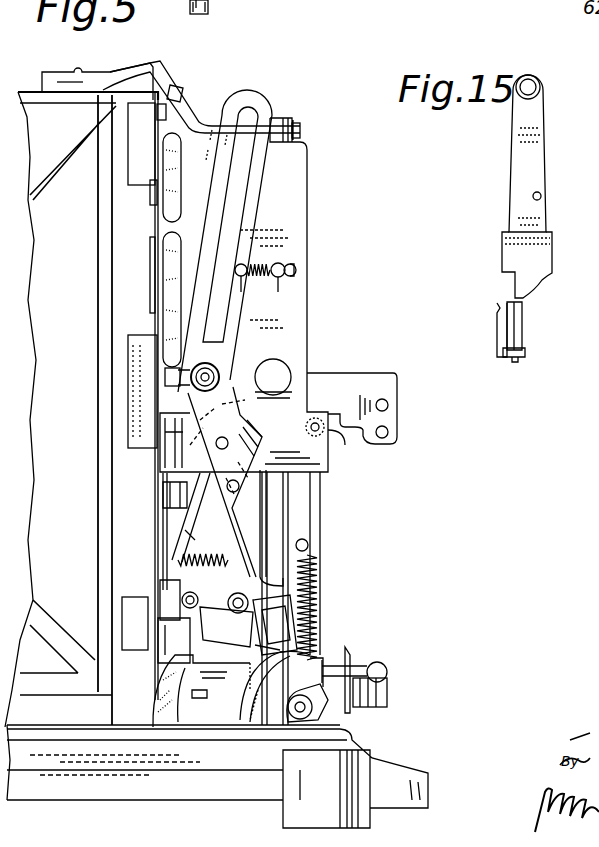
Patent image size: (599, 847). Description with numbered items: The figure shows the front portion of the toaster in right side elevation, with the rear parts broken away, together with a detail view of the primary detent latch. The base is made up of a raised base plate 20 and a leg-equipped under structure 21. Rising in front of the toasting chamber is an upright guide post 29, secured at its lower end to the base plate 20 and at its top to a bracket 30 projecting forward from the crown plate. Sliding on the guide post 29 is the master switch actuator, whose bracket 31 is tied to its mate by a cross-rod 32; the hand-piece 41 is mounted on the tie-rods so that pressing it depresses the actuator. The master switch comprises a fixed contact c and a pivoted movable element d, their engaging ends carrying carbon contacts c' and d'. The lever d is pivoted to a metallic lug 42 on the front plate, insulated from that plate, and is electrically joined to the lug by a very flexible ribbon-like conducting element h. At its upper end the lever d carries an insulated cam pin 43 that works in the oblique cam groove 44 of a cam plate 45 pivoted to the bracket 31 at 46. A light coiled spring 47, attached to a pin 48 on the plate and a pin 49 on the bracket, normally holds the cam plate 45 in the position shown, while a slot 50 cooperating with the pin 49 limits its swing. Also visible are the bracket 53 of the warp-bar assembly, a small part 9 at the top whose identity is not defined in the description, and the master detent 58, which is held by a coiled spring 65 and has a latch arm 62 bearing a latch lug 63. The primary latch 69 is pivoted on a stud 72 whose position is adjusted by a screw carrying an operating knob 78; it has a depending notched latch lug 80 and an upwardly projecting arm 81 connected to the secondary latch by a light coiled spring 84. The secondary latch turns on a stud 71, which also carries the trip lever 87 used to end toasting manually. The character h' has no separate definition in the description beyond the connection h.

In FIG. 5, the pin 9 is at (203, 14).
In FIG. 5, the base plate 20 is at (65, 748).
In FIG. 5, the under structure 21 is at (155, 800).
In FIG. 5, the guide posts 29 is at (303, 148).
In FIG. 5, the brackets 30 is at (170, 50).
In FIG. 5, the brackets 31 is at (312, 455).
In FIG. 5, the cross-rod 32 is at (280, 7).
In FIG. 5, the hand-piece 41 is at (368, 380).
In FIG. 5, the lug 42 is at (165, 440).
In FIG. 5, the cam pin 43 is at (218, 368).
In FIG. 5, the cam groove 44 is at (265, 232).
In FIG. 5, the cam plate 45 is at (298, 310).
In FIG. 5, the pivot 46 is at (275, 378).
In FIG. 5, the coiled spring 47 is at (262, 265).
In FIG. 5, the pin 48 is at (245, 286).
In FIG. 5, the pin 49 is at (282, 286).
In FIG. 5, the slot 50 is at (296, 270).
In FIG. 5, the bracket 53 is at (190, 8).
In FIG. 5, the master detent 58 is at (247, 718).
In FIG. 5, the coiled spring 65 is at (305, 567).
In FIG. 5, the stud 71 is at (290, 602).
In FIG. 5, the stud 72 is at (183, 598).
In FIG. 5, the operating knob 78 is at (378, 685).
In FIG. 5, the coiled spring 84 is at (217, 482).
In FIG. 5, the trip lever 87 is at (226, 620).
In FIG. 5, the conducting element h is at (128, 250).
In FIG. 5, the slot h' is at (198, 526).
In FIG. 5, the contact c is at (110, 622).
In FIG. 5, the carbon contact c' is at (145, 663).
In FIG. 5, the movable element d is at (300, 528).
In FIG. 5, the carbon contact d' is at (310, 628).
In FIG. 15, the arm 81 is at (535, 166).
In FIG. 15, the primary latch 69 is at (512, 247).
In FIG. 15, the latch lug 80 is at (522, 332).
In FIG. 15, the latch arm 62 is at (500, 322).
In FIG. 15, the latch lug 63 is at (522, 356).